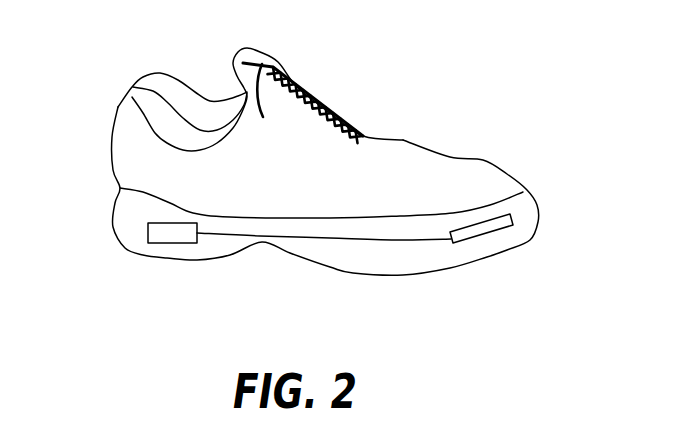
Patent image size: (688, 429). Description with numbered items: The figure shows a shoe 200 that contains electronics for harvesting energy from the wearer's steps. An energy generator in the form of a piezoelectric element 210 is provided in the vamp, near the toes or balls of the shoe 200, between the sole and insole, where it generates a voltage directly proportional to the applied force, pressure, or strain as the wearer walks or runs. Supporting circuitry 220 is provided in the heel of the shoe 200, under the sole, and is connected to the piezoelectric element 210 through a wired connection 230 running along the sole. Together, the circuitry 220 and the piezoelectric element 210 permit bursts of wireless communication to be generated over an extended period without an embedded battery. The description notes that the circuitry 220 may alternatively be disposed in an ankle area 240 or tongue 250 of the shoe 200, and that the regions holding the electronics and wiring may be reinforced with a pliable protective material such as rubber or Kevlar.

The shoe 200 is at (407, 131).
The piezoelectric element 210 is at (487, 233).
The circuitry 220 is at (155, 243).
The wired connection 230 is at (370, 239).
The ankle area 240 is at (136, 89).
The tongue 250 is at (318, 88).